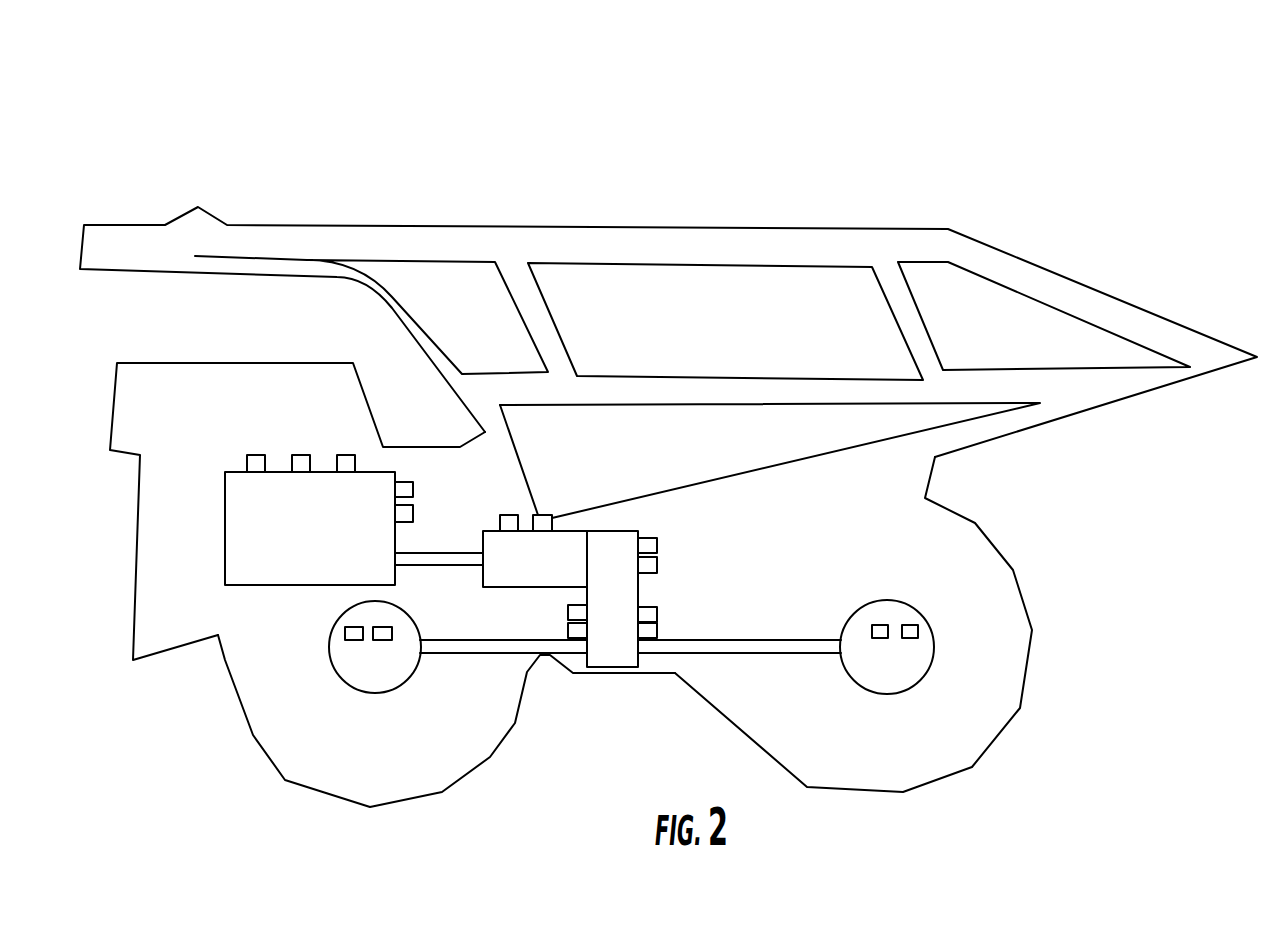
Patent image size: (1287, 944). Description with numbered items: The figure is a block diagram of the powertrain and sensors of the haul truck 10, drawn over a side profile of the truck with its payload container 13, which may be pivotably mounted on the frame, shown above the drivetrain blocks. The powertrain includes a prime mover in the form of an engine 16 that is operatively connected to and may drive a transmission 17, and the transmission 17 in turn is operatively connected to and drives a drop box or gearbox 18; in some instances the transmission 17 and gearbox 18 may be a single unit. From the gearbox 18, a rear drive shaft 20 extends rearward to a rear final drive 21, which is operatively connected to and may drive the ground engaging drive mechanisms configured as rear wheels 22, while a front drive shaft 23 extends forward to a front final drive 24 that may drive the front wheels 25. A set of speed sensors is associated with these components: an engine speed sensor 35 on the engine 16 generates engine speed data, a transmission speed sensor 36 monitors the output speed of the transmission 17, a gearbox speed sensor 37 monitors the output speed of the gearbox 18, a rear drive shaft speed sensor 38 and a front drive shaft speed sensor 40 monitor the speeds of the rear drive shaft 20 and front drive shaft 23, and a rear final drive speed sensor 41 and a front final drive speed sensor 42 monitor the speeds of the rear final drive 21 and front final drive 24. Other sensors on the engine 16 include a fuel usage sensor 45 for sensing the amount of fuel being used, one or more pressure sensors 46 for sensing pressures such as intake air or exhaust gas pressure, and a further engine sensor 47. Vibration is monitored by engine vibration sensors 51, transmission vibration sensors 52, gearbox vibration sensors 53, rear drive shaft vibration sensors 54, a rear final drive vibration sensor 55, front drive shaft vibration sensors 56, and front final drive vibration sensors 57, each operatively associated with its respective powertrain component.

The haul truck 10 is at (312, 140).
The payload container 13 is at (978, 258).
The engine 16 is at (240, 507).
The transmission 17 is at (558, 545).
The gearbox 18 is at (613, 547).
The rear drive shaft 20 is at (763, 638).
The rear final drive 21 is at (910, 615).
The rear wheels 22 is at (930, 767).
The front drive shaft 23 is at (468, 647).
The front final drive 24 is at (377, 678).
The front wheels 25 is at (378, 788).
The engine speed sensor 35 is at (408, 487).
The transmission speed sensor 36 is at (515, 515).
The gearbox speed sensor 37 is at (650, 545).
The rear drive shaft speed sensor 38 is at (650, 610).
The front drive shaft speed sensor 40 is at (568, 612).
The rear final drive speed sensor 41 is at (877, 625).
The front final drive speed sensor 42 is at (348, 632).
The fuel usage sensor 45 is at (348, 455).
The pressure sensors 46 is at (302, 455).
The operator input device 47 is at (257, 455).
The engine vibration sensors 51 is at (408, 512).
The transmission vibration sensors 52 is at (542, 515).
The gearbox vibration sensors 53 is at (657, 567).
The rear drive shaft vibration sensors 54 is at (657, 633).
The rear final drive vibration sensor 55 is at (918, 630).
The front drive shaft vibration sensors 56 is at (568, 634).
The front final drive vibration sensors 57 is at (383, 630).